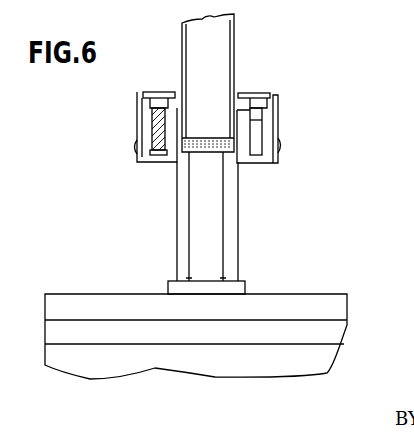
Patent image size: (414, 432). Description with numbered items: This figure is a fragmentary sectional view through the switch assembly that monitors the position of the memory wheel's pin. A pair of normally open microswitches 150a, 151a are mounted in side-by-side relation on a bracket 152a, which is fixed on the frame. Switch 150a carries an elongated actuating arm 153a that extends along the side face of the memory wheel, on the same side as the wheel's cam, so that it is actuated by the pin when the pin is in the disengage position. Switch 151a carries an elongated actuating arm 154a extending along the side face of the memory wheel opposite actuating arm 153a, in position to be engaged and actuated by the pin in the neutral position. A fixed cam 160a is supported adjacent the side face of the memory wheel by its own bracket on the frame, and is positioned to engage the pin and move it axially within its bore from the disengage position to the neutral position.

The microswitch 150a is at (138, 160).
The microswitch 151a is at (268, 128).
The bracket 152a is at (177, 221).
The actuating arm 153a is at (138, 90).
The actuating arm 154a is at (277, 94).
The fixed cam 160a is at (150, 120).